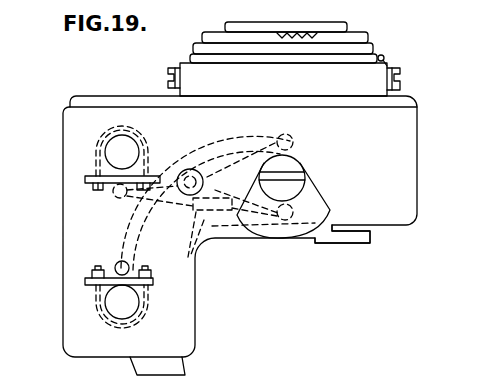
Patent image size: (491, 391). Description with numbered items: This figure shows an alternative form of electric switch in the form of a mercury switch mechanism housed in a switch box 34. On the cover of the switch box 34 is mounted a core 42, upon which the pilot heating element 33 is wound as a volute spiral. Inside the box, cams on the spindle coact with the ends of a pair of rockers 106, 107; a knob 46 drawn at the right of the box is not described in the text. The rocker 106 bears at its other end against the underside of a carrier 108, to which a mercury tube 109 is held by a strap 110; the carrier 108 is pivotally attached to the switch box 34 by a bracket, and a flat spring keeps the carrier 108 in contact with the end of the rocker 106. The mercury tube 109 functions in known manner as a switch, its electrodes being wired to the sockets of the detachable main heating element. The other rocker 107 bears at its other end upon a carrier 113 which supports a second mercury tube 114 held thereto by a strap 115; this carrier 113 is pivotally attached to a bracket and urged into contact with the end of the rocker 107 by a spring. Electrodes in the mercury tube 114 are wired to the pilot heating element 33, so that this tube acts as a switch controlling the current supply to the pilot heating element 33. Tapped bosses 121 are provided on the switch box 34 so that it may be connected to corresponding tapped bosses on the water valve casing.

The pilot heating element 33 is at (332, 29).
The switch box 34 is at (407, 139).
The core 42 is at (365, 76).
The slotted knob 46 is at (283, 238).
The rocker 106 is at (112, 193).
The rocker 107 is at (233, 146).
The carrier 108 is at (85, 177).
The mercury tube 109 is at (117, 150).
The strap 110 is at (118, 124).
The carrier 113 is at (87, 282).
The mercury tube 114 is at (127, 303).
The strap 115 is at (97, 317).
The tapped bosses 121 is at (180, 363).